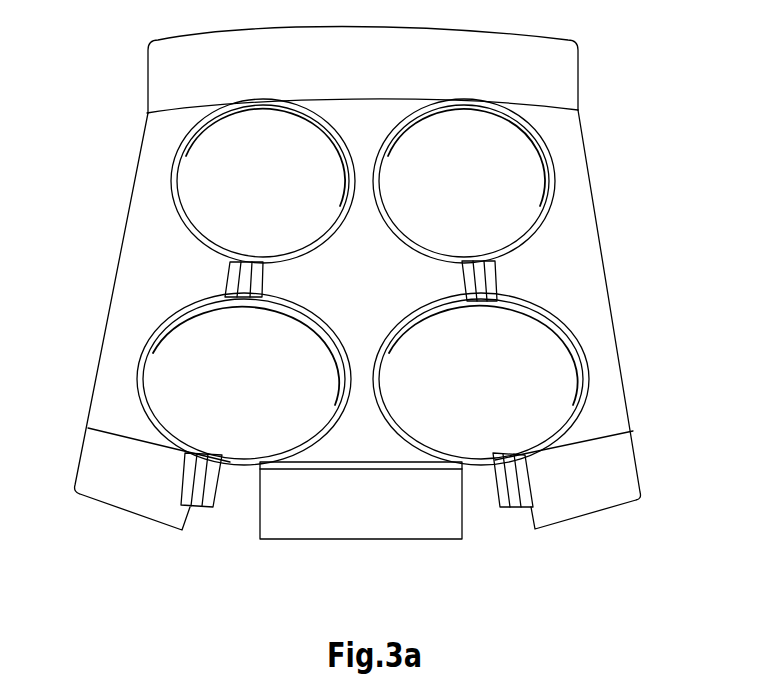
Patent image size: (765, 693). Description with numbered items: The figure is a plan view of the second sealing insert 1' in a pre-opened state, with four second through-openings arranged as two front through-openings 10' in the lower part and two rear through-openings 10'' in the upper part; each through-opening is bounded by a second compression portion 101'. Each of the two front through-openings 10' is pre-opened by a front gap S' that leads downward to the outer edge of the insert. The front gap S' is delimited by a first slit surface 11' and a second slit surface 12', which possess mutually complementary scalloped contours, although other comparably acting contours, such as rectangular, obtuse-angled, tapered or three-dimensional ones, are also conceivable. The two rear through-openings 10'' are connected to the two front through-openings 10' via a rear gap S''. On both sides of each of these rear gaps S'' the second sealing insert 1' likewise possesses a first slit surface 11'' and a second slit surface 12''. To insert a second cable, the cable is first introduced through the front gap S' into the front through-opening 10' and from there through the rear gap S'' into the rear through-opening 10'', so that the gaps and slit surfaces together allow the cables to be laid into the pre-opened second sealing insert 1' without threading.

The second sealing insert 1' is at (364, 313).
The rear through-openings 10'' is at (364, 181).
The front through-openings 10' is at (364, 379).
The second compression portion 101' is at (363, 181).
The rear gap S'' is at (368, 291).
The first slit surface 11'' is at (337, 331).
The second slit surface 12'' is at (380, 335).
The front gap S' is at (363, 490).
The first slit surface 11' is at (321, 538).
The second slit surface 12' is at (388, 538).